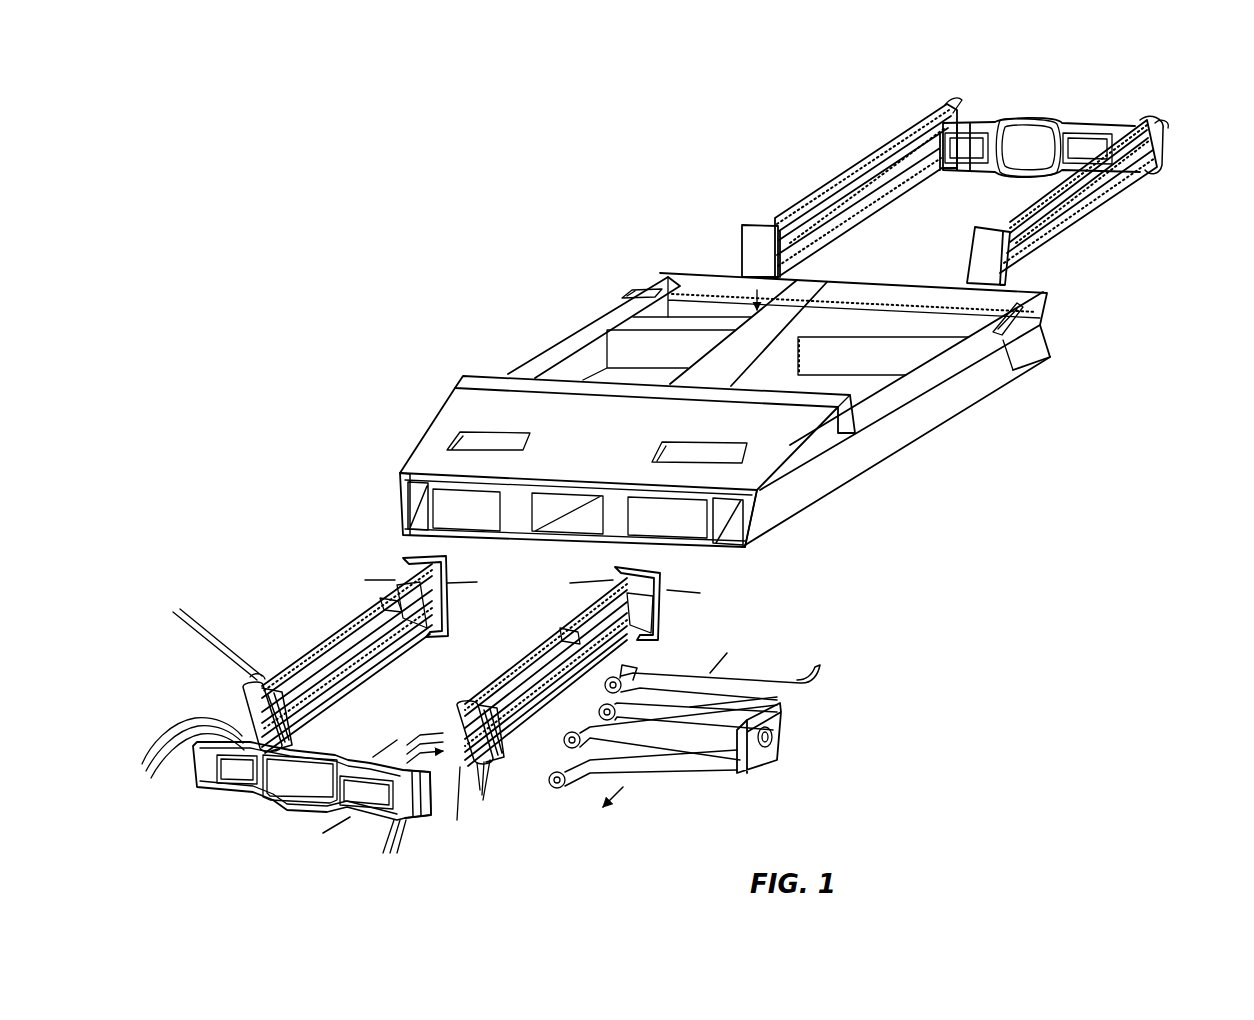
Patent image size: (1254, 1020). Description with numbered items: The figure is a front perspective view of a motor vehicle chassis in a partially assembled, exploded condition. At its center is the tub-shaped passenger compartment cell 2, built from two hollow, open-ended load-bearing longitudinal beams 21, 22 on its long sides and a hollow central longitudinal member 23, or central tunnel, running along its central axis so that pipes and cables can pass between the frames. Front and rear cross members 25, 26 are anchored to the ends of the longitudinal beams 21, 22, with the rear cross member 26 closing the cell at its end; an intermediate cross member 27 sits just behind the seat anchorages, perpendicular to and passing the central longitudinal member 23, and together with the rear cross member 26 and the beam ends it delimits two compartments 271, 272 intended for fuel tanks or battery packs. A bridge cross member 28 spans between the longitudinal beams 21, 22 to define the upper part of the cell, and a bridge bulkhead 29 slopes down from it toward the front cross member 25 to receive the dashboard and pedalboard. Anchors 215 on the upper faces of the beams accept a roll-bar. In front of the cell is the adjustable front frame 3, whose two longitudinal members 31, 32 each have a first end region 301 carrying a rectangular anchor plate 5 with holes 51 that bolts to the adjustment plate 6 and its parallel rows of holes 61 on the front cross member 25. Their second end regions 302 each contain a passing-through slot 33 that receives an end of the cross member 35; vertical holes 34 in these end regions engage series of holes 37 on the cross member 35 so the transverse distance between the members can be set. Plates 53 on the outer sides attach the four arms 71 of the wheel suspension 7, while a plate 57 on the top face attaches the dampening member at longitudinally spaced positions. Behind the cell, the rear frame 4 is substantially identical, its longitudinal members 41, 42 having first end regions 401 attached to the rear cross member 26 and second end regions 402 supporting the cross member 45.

The passenger compartment cell 2 is at (736, 376).
The longitudinal beam 21 is at (993, 370).
The longitudinal beam 22 is at (570, 330).
The central longitudinal member 23 is at (667, 283).
The front cross member 25 is at (513, 503).
The rear cross member 26 is at (1048, 310).
The intermediate cross member 27 is at (900, 357).
The bridge cross member 28 is at (513, 385).
The bridge bulkhead 29 is at (470, 413).
The anchors 215 is at (630, 297).
The compartment 271 is at (905, 315).
The compartment 272 is at (745, 340).
The front frame 3 is at (668, 451).
The longitudinal member 31 is at (525, 645).
The longitudinal member 32 is at (337, 612).
The passing-through slot 33 is at (484, 783).
The holes 34 is at (1170, 120).
The cross member 35 is at (295, 818).
The holes 37 is at (264, 791).
The first end region 301 is at (440, 633).
The second end region 302 is at (247, 688).
The rear frame 4 is at (973, 153).
The longitudinal member 41 is at (1175, 152).
The longitudinal member 42 is at (913, 110).
The cross member 45 is at (1050, 112).
The first end region 401 is at (797, 265).
The second end region 402 is at (942, 104).
The anchor plate 5 is at (755, 230).
The holes 51 is at (763, 250).
The plate 53 is at (873, 213).
The plate 57 is at (310, 630).
The adjustment plate 6 is at (453, 505).
The holes 61 is at (787, 517).
The suspension 7 is at (687, 741).
The arms 71 is at (781, 715).